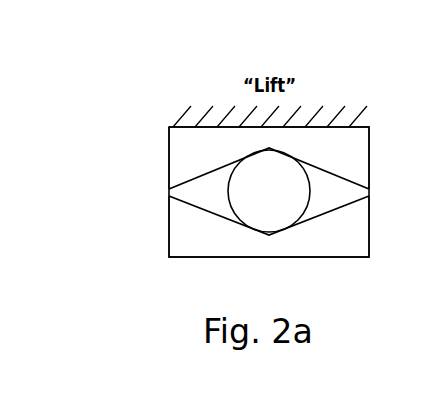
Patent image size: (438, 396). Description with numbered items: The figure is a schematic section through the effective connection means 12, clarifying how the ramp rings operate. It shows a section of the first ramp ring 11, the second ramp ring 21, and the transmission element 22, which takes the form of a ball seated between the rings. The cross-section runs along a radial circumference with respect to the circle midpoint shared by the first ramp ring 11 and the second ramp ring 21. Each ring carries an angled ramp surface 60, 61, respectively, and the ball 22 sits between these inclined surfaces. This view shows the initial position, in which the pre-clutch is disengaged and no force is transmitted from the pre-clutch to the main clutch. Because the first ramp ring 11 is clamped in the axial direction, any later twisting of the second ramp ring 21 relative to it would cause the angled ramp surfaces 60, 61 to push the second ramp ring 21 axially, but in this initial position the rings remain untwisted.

The effective connection means 12 is at (165, 83).
The second ramp ring 21 is at (188, 150).
The first ramp ring 11 is at (197, 233).
The transmission element 22 is at (262, 189).
The ramp surface 60 is at (352, 173).
The ramp surface 61 is at (315, 230).